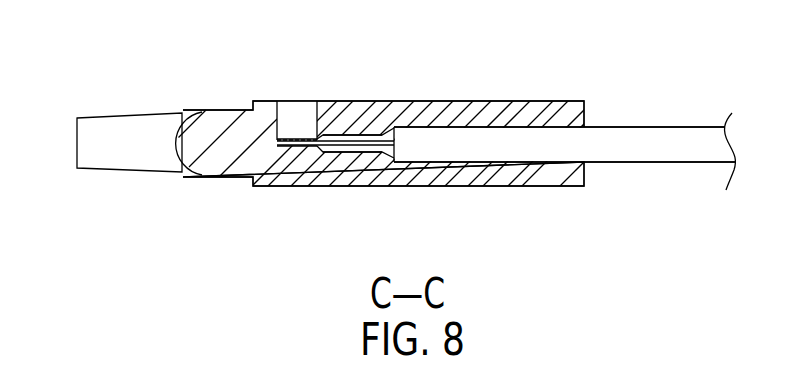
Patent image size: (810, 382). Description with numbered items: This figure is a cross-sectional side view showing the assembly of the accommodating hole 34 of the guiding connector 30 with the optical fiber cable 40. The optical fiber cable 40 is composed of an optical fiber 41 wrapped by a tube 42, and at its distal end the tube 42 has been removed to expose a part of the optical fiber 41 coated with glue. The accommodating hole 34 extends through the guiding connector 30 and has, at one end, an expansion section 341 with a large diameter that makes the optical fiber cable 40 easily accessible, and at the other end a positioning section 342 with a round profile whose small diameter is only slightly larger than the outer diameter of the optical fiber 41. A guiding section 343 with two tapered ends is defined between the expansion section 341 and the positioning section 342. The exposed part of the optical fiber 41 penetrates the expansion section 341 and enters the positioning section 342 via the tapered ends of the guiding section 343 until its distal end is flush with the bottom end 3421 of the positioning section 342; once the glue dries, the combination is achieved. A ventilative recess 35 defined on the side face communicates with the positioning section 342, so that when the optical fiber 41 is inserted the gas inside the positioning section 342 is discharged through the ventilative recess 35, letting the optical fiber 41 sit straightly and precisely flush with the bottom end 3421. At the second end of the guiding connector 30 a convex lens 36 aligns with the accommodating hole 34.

The guiding connector 30 is at (223, 108).
The accommodating hole 34 is at (498, 127).
The ventilative recess 35 is at (298, 112).
The convex lens 36 is at (183, 148).
The guiding section 343 is at (365, 136).
The positioning section 342 is at (305, 148).
The bottom end 3421 is at (279, 148).
The optical fiber 41 is at (347, 143).
The expansion section 341 is at (490, 142).
The tube 42 is at (637, 148).
The optical fiber cable 40 is at (697, 139).